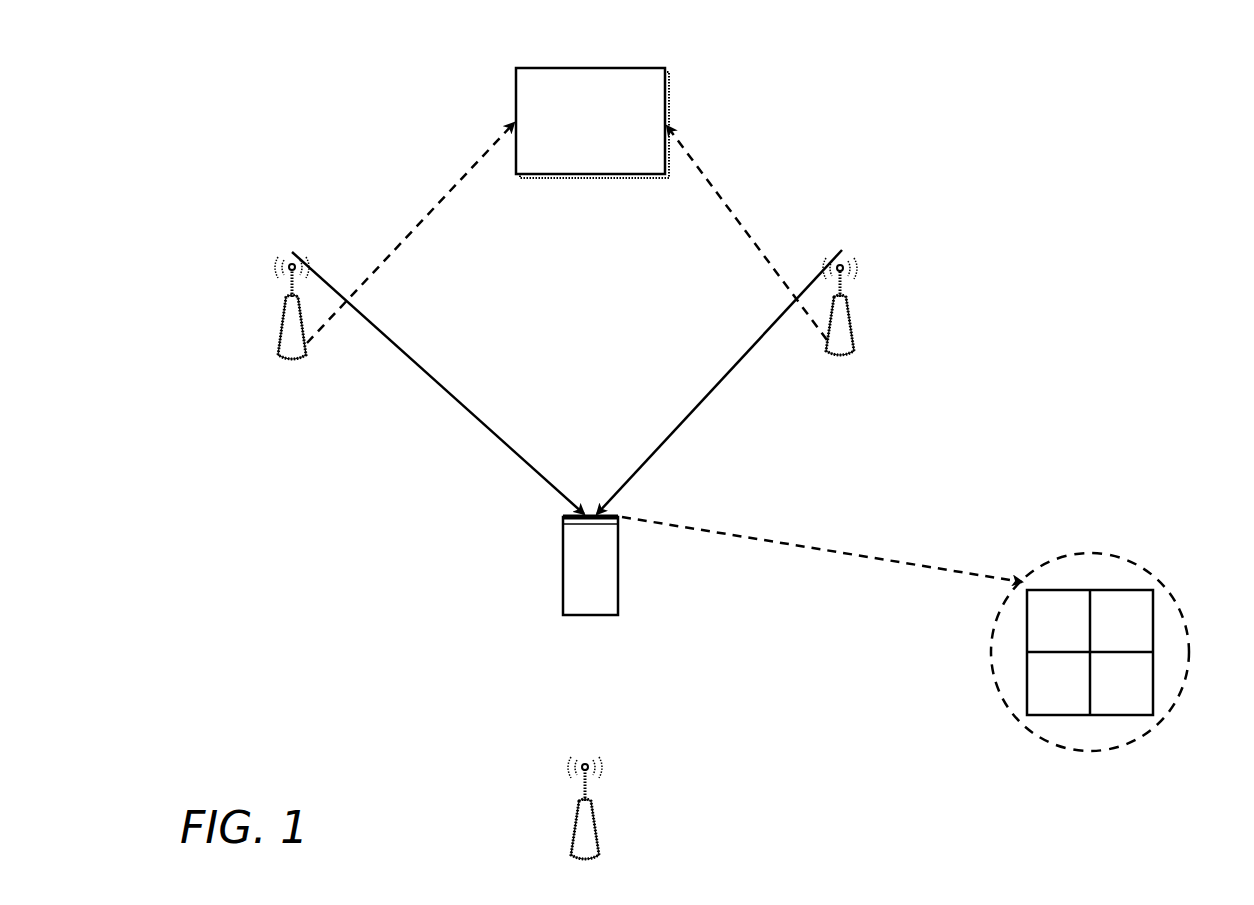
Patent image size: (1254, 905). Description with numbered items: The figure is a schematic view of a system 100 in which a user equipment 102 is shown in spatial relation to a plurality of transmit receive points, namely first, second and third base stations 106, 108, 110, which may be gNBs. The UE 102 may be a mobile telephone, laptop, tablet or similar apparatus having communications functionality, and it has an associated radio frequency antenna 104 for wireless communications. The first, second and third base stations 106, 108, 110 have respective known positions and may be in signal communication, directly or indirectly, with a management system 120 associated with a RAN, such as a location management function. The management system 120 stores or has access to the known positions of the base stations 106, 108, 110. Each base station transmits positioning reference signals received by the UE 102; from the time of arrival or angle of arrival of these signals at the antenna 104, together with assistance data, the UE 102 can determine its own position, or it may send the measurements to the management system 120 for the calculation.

The wireless communication system 100 is at (1075, 113).
The user equipment 102 is at (562, 566).
The radio frequency antenna 104 is at (562, 520).
The first base station 106 is at (278, 345).
The second base station 108 is at (852, 330).
The third base station 110 is at (598, 843).
The management system 120 is at (588, 175).